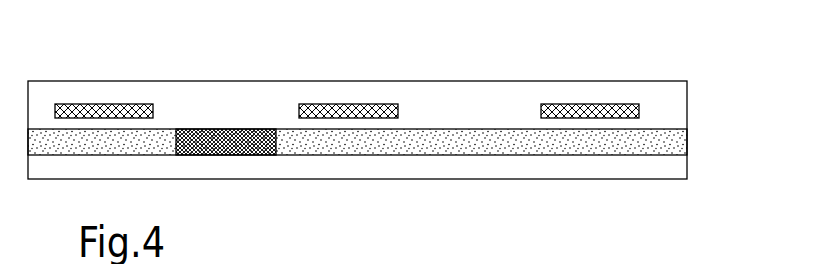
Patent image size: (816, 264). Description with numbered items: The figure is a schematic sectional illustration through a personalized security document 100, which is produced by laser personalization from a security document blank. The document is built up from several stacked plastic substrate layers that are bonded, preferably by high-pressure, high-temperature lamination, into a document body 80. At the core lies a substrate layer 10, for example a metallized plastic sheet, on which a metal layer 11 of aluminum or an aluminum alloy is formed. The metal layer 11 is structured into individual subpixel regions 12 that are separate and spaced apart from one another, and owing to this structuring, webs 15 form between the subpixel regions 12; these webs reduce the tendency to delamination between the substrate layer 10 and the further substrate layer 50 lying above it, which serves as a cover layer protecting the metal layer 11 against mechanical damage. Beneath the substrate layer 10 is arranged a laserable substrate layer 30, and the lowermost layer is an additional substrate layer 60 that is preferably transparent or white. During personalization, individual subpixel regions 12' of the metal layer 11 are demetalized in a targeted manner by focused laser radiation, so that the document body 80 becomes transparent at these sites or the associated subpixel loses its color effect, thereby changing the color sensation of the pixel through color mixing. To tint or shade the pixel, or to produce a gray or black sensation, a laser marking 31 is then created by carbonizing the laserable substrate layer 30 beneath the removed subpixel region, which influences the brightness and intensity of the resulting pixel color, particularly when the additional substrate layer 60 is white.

The personalized security document 100 is at (681, 63).
The substrate layer 10 is at (689, 125).
The further substrate layer 50 is at (689, 90).
The document body 80 is at (689, 104).
The metal layer 11 is at (706, 108).
The subpixel regions 12 is at (347, 75).
The demetalized subpixel regions 12' is at (347, 75).
The webs 15 is at (403, 113).
The laserable substrate layer 30 is at (689, 148).
The laser marking 31 is at (217, 157).
The additional substrate layer 60 is at (689, 180).